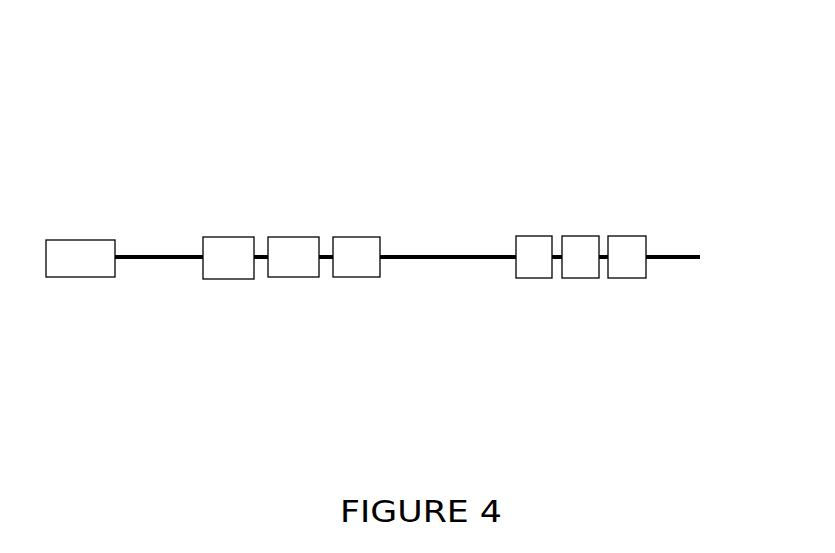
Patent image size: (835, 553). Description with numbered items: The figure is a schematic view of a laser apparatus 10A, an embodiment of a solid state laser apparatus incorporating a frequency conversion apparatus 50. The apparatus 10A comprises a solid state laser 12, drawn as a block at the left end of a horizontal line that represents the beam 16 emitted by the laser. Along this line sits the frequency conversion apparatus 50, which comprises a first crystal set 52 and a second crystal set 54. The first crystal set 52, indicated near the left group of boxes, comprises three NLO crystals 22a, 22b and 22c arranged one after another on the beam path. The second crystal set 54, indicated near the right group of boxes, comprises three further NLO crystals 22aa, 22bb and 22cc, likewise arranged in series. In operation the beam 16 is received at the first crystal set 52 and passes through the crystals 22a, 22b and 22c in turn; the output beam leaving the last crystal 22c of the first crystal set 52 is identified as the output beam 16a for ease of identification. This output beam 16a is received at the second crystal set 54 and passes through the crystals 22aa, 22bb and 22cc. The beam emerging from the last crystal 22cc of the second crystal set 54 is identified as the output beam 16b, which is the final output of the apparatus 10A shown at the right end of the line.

The laser apparatus 10A is at (568, 93).
The solid state laser 12 is at (59, 130).
The beam 16 is at (129, 369).
The output beam 16a is at (405, 265).
The output beam 16b is at (675, 247).
The NLO crystal 22a is at (206, 120).
The NLO crystal 22b is at (286, 397).
The NLO crystal 22c is at (337, 122).
The NLO crystal 22aa is at (517, 391).
The NLO crystal 22bb is at (584, 233).
The NLO crystal 22cc is at (631, 391).
The frequency conversion apparatus 50 is at (462, 72).
The first crystal set 52 is at (287, 105).
The second crystal set 54 is at (647, 160).